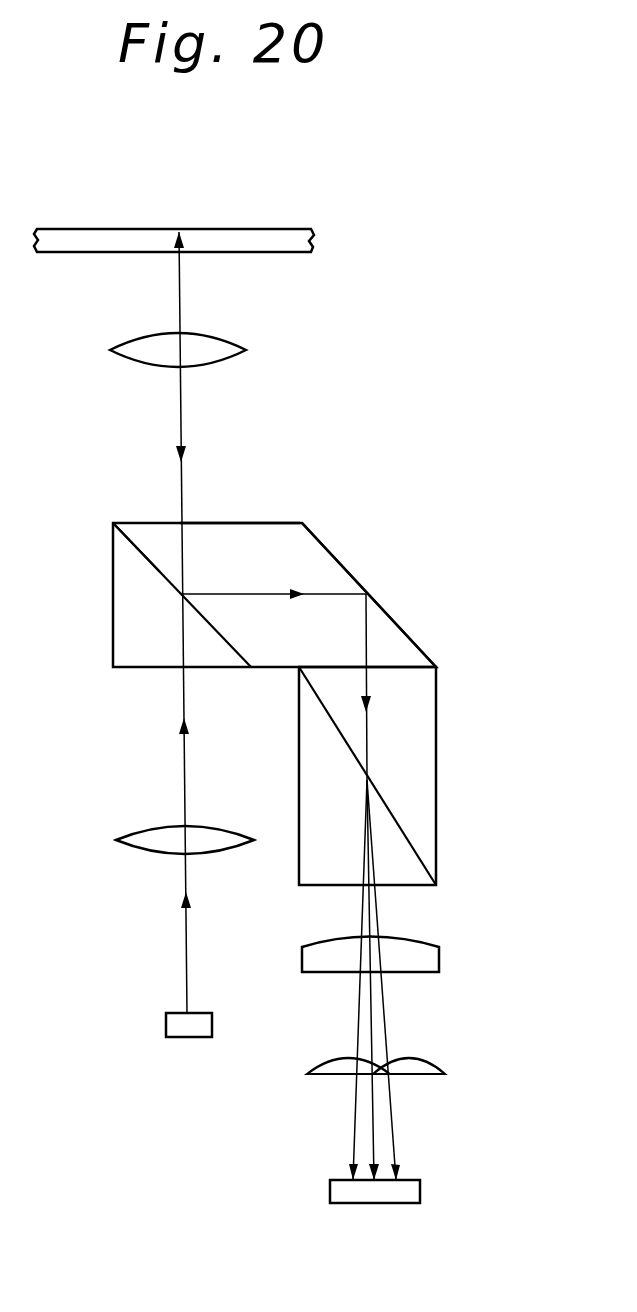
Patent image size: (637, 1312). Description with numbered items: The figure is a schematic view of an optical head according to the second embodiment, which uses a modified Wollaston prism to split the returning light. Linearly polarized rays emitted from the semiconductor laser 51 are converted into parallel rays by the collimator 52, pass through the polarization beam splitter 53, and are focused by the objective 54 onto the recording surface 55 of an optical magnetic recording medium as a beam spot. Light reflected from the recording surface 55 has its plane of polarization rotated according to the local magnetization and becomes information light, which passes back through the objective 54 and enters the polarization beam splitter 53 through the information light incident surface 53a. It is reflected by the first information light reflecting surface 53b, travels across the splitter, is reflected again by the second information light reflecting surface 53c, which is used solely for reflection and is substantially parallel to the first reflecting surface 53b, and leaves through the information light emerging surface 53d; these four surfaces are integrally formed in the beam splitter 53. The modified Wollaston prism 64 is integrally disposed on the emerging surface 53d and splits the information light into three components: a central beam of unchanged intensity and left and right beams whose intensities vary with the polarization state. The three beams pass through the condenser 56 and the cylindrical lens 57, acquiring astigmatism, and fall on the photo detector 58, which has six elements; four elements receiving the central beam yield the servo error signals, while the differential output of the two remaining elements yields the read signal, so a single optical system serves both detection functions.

The semiconductor laser 51 is at (176, 1026).
The collimator 52 is at (136, 838).
The polarization beam splitter 53 is at (114, 612).
The information light incident surface 53a is at (222, 523).
The first information light reflecting surface 53b is at (137, 550).
The second information light reflecting surface 53c is at (326, 549).
The information light emerging surface 53d is at (399, 667).
The objective 54 is at (128, 347).
The recording surface 55 is at (146, 229).
The condenser 56 is at (437, 958).
The cylindrical lens 57 is at (430, 1068).
The photo detector 58 is at (418, 1190).
The modified Wollaston prism 64 is at (437, 771).